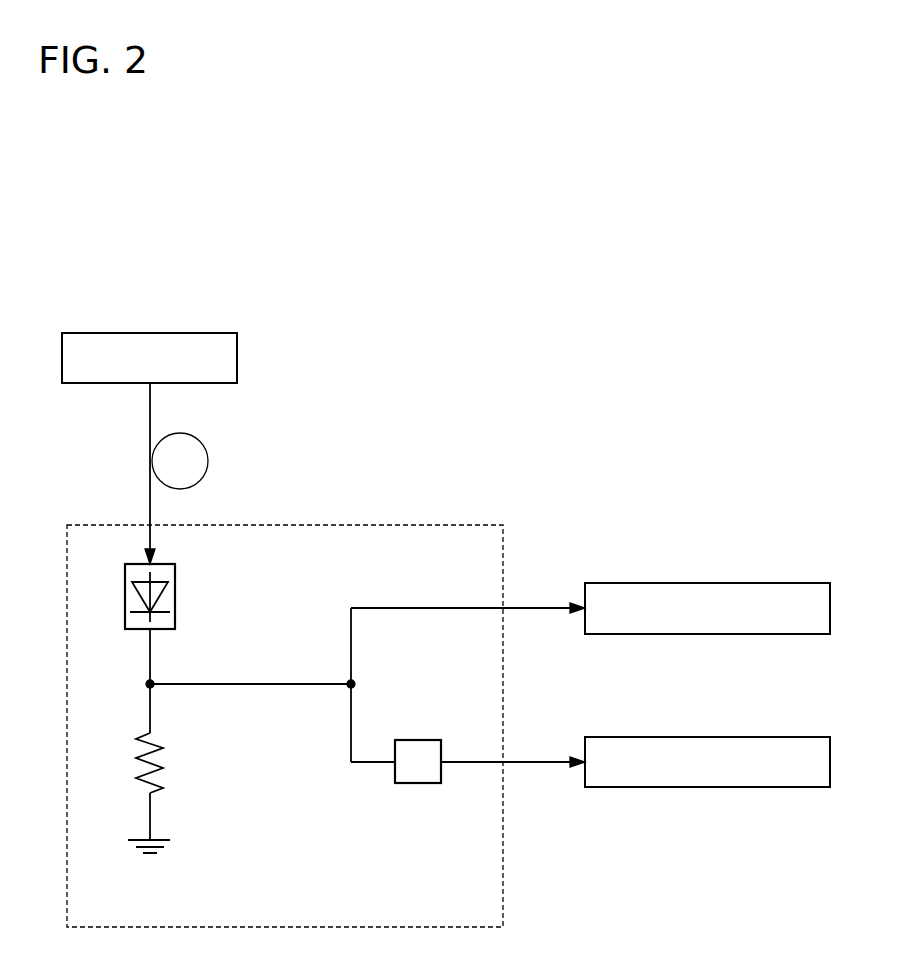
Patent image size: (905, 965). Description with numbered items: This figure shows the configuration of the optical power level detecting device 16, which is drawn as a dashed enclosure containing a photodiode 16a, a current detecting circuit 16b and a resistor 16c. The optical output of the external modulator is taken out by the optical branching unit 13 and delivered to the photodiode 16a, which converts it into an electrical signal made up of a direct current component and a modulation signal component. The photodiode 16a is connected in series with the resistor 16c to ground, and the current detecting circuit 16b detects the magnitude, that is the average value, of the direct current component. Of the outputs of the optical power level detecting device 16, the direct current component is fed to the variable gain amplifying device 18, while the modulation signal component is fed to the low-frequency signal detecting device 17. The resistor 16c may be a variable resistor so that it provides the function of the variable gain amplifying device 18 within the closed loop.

The optical branching unit 13 is at (237, 357).
The optical power level detecting device 16 is at (447, 525).
The photodiode 16a is at (175, 587).
The current detecting circuit 16b is at (418, 783).
The resistor 16c is at (162, 775).
The low-frequency signal detecting device 17 is at (770, 583).
The variable gain amplifying device 18 is at (775, 737).